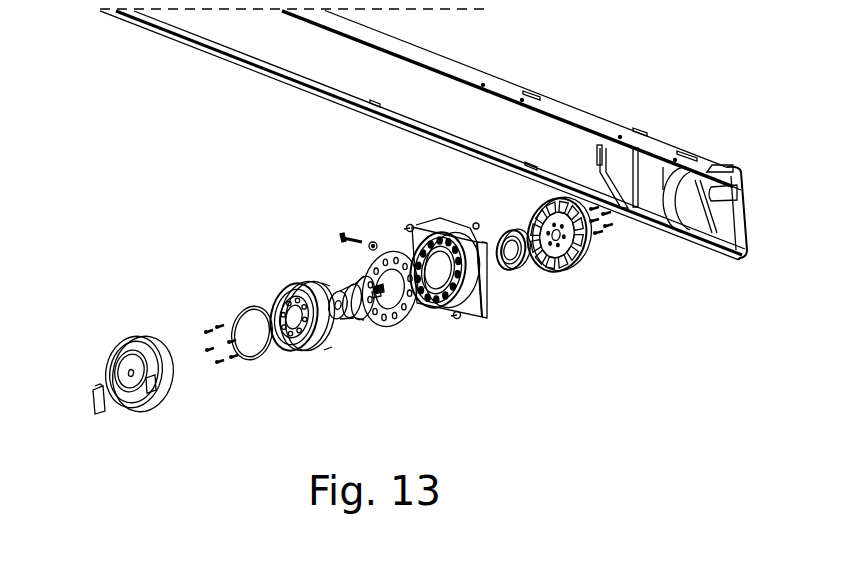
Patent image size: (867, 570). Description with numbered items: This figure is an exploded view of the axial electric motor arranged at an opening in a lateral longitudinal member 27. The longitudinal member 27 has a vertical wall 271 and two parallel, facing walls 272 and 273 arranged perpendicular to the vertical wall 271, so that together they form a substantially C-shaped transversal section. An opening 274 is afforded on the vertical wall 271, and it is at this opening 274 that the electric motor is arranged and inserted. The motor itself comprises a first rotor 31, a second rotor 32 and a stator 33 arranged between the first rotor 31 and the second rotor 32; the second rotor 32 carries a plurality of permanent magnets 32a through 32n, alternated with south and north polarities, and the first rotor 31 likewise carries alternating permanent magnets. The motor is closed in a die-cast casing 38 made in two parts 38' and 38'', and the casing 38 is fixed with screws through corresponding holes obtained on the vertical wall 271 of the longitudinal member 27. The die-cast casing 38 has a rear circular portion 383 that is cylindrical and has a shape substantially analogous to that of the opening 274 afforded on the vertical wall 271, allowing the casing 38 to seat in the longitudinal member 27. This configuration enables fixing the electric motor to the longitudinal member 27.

The longitudinal member 27 is at (278, 88).
The vertical wall 271 is at (530, 133).
The wall 272 is at (347, 25).
The wall 273 is at (250, 63).
The opening 274 is at (680, 200).
The first rotor 31 is at (582, 260).
The second rotor 32 is at (300, 352).
The permanent magnet 32a is at (310, 282).
The permanent magnet 32n is at (328, 330).
The stator 33 is at (433, 303).
The die-cast casing 38 is at (375, 283).
The casing part 38' is at (143, 389).
The casing part 38'' is at (511, 303).
The rear circular portion 383 is at (460, 232).